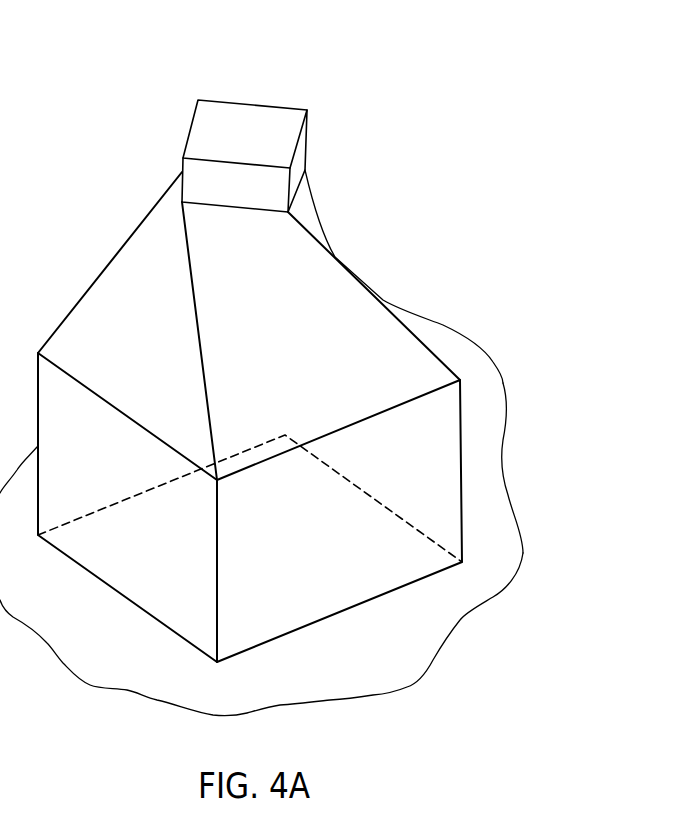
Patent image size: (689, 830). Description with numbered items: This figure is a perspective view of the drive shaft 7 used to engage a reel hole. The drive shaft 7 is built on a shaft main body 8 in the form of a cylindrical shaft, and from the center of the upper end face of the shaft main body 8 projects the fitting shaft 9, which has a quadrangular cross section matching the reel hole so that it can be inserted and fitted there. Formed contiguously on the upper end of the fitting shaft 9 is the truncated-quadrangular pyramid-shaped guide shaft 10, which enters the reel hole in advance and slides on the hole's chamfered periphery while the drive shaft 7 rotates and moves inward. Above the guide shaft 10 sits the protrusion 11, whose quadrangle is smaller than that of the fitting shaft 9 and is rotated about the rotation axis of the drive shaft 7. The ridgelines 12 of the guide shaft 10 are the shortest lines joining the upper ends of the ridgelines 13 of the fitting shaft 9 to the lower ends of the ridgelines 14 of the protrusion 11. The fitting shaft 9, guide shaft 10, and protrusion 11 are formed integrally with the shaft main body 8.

The drive shaft 7 is at (428, 205).
The shaft main body 8 is at (488, 502).
The fitting shaft 9 is at (362, 568).
The guide shaft 10 is at (325, 300).
The protrusion 11 is at (228, 124).
The ridgelines of the guide shaft 12 is at (448, 368).
The ridgelines of the fitting shaft 13 is at (462, 443).
The ridgelines of the protrusion 14 is at (290, 178).